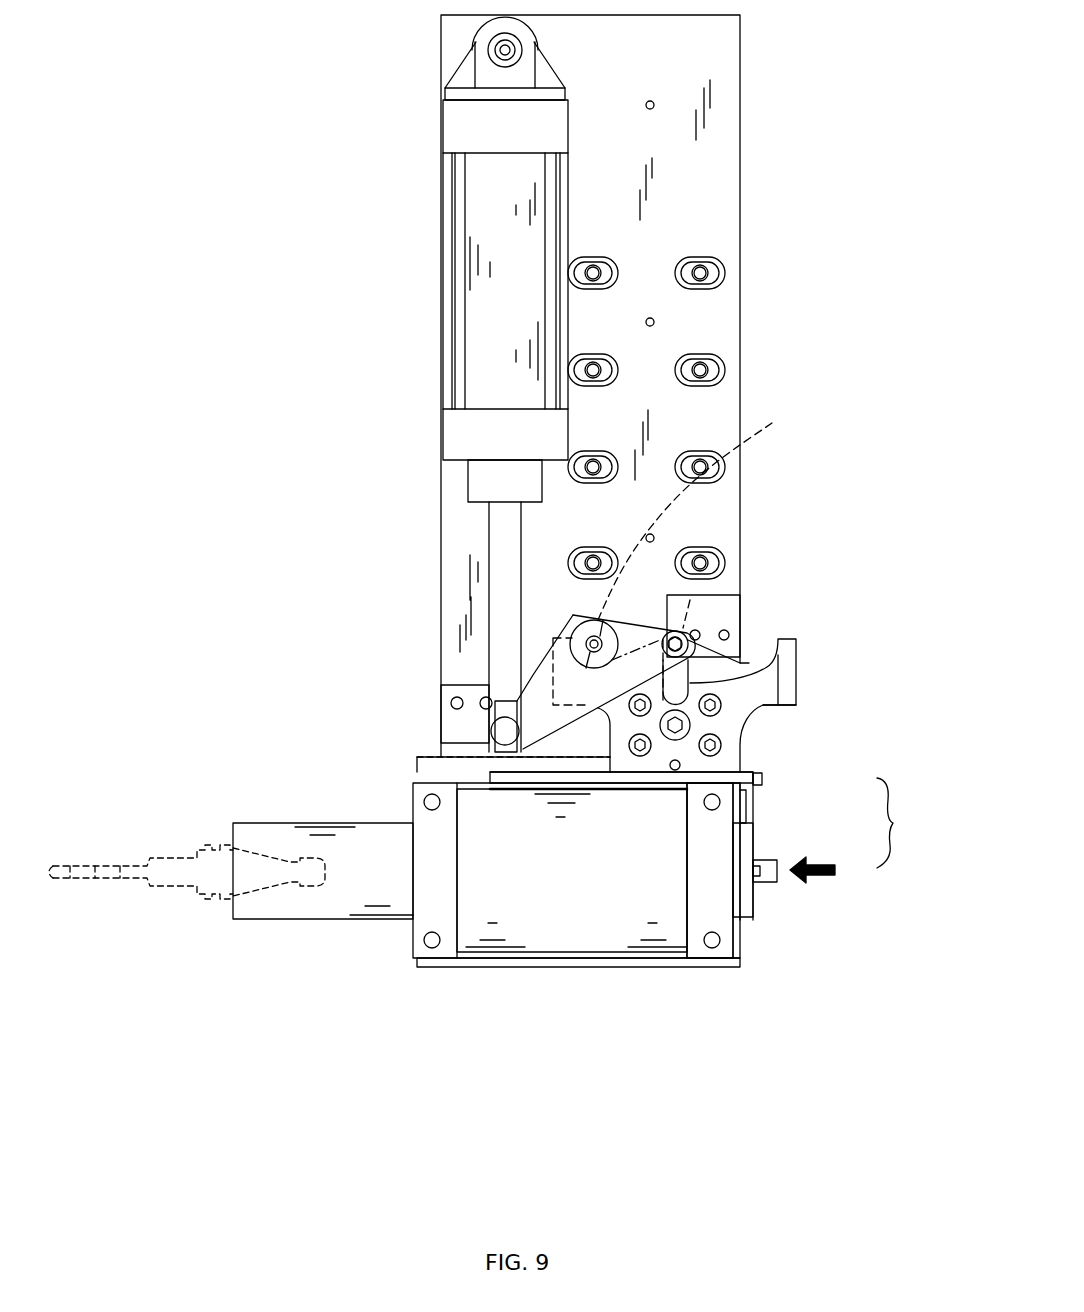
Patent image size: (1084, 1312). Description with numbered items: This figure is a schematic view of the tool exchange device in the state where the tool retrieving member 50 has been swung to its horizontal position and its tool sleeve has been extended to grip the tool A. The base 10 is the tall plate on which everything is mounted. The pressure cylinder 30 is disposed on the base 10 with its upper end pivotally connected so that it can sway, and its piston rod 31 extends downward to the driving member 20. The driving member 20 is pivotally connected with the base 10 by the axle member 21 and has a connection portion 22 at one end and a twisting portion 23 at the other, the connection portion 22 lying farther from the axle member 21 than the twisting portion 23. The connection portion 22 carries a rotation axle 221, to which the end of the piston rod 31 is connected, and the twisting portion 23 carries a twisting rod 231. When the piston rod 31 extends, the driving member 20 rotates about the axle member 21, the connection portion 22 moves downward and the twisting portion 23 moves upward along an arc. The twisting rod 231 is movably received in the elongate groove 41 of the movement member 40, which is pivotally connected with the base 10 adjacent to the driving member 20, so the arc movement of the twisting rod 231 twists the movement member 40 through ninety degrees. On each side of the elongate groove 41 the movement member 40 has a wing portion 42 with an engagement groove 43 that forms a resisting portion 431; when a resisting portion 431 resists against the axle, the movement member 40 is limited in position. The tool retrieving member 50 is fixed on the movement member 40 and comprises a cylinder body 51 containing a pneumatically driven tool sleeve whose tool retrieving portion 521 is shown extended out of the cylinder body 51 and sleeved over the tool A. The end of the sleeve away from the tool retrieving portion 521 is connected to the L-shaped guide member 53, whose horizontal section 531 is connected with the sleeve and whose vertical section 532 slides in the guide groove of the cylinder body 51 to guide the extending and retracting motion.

The base 10 is at (718, 167).
The driving member 20 is at (533, 677).
The axle member 21 is at (655, 638).
The connection portion 22 is at (497, 730).
The rotation axle 221 is at (505, 738).
The twisting portion 23 is at (678, 630).
The twisting rod 231 is at (685, 628).
The pressure cylinder 30 is at (473, 233).
The piston rod 31 is at (495, 592).
The movement member 40 is at (737, 743).
The elongate groove 41 is at (787, 690).
The wing portion 42 is at (790, 690).
The engagement groove 43 is at (749, 658).
The resisting portion 431 is at (776, 650).
The tool retrieving member 50 is at (572, 945).
The cylinder body 51 is at (712, 955).
The tool retrieving portion 521 is at (320, 920).
The guide member 53 is at (834, 849).
The horizontal section 531 is at (753, 833).
The vertical section 532 is at (697, 780).
The tool A is at (192, 855).